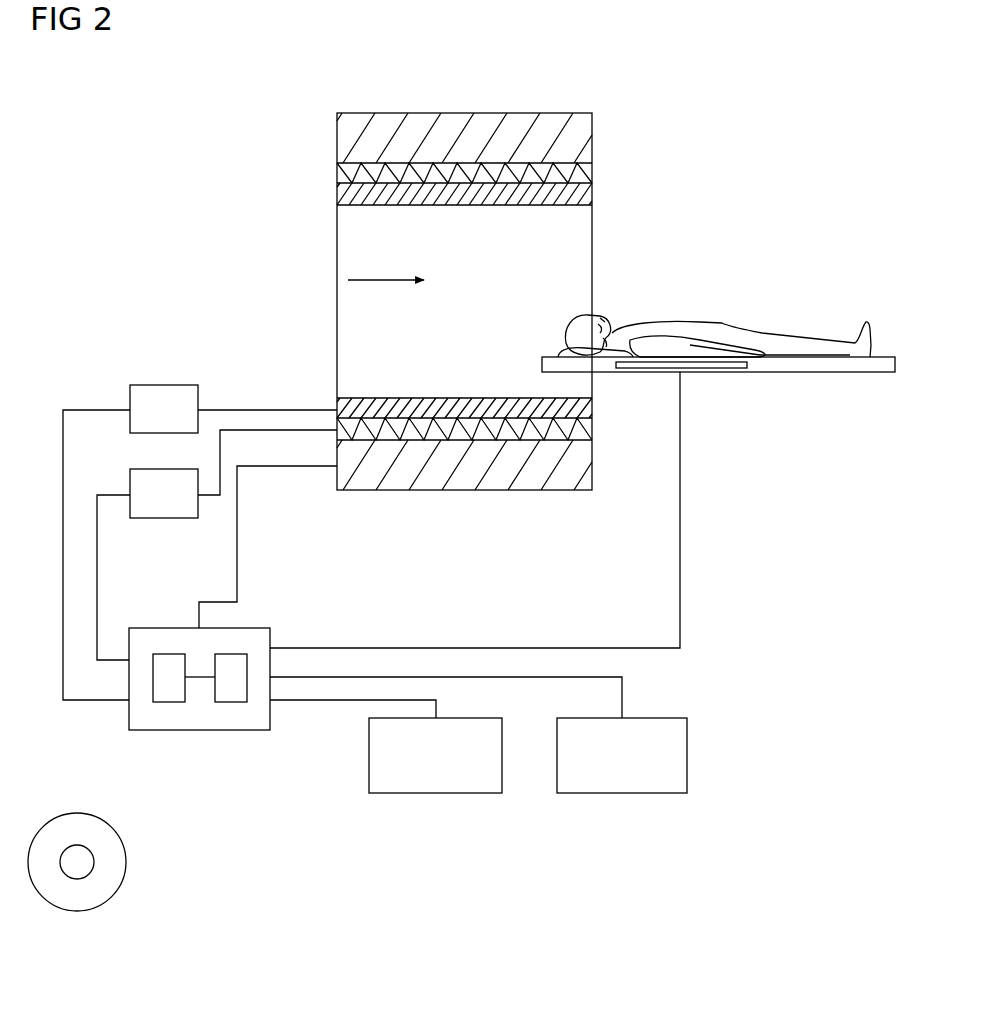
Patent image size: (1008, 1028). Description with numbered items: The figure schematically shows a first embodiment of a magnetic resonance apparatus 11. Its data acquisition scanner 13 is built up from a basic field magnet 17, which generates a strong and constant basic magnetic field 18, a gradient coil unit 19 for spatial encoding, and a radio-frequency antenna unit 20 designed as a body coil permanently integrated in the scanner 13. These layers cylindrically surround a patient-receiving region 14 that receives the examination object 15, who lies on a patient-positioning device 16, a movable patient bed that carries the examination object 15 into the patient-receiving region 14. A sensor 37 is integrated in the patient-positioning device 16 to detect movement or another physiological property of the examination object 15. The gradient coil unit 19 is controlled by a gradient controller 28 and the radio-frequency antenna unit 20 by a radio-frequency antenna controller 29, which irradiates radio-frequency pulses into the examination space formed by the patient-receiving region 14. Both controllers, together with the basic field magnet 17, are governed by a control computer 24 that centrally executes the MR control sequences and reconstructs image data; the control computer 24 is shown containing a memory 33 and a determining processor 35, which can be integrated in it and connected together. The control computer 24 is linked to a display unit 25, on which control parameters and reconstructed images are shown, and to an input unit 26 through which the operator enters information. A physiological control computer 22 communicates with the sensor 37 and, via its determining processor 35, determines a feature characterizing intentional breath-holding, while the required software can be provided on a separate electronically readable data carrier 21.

The magnetic resonance apparatus 11 is at (742, 165).
The data acquisition scanner 13 is at (360, 98).
The patient-receiving region 14 is at (560, 266).
The examination object 15 is at (784, 334).
The patient-positioning device 16 is at (823, 372).
The basic field magnet 17 is at (592, 128).
The basic magnetic field 18 is at (385, 282).
The gradient coil unit 19 is at (592, 172).
The radio-frequency antenna unit 20 is at (592, 190).
The electronically readable data carrier 21 is at (126, 862).
The physiological control computer 22 is at (704, 622).
The control computer 24 is at (198, 730).
The display unit 25 is at (436, 793).
The input unit 26 is at (620, 793).
The gradient controller 28 is at (165, 518).
The radio-frequency antenna controller 29 is at (164, 385).
The memory 33 is at (165, 702).
The determining processor 35 is at (232, 702).
The sensor 37 is at (725, 368).